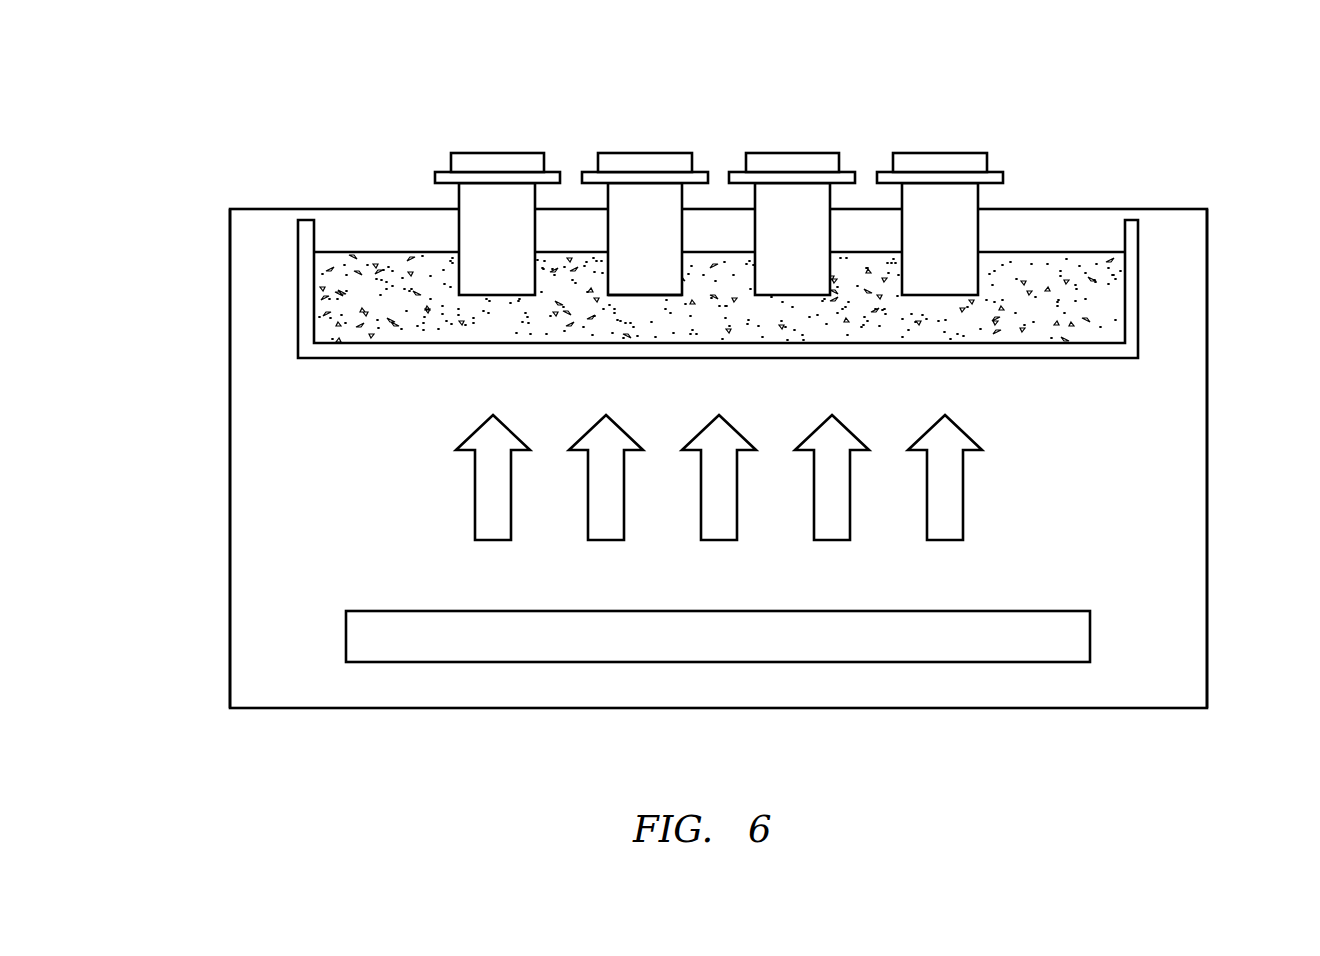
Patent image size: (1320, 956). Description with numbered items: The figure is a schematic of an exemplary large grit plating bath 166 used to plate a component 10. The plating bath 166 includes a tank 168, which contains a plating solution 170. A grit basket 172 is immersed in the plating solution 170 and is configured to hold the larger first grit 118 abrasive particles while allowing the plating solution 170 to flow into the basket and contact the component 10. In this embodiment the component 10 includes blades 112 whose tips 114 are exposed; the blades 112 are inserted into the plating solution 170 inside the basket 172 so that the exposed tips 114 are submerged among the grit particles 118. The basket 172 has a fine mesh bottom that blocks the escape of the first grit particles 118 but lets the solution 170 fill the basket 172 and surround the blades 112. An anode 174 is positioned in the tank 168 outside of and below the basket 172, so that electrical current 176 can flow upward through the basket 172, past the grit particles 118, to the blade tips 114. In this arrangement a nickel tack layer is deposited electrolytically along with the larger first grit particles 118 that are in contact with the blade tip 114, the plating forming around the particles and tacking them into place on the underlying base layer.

The component 10 is at (704, 221).
The blades 112 is at (795, 152).
The tips 114 is at (640, 295).
The first grit 118 is at (1053, 252).
The large grit plating bath 166 is at (193, 197).
The tank 168 is at (230, 407).
The plating solution 170 is at (1172, 392).
The grit basket 172 is at (298, 250).
The anode 174 is at (368, 662).
The electrical current 176 is at (476, 498).